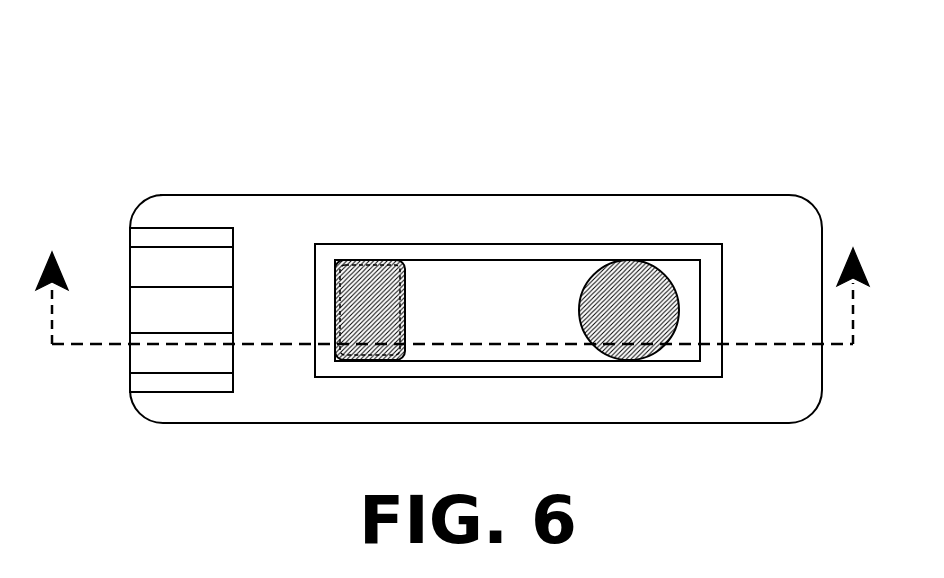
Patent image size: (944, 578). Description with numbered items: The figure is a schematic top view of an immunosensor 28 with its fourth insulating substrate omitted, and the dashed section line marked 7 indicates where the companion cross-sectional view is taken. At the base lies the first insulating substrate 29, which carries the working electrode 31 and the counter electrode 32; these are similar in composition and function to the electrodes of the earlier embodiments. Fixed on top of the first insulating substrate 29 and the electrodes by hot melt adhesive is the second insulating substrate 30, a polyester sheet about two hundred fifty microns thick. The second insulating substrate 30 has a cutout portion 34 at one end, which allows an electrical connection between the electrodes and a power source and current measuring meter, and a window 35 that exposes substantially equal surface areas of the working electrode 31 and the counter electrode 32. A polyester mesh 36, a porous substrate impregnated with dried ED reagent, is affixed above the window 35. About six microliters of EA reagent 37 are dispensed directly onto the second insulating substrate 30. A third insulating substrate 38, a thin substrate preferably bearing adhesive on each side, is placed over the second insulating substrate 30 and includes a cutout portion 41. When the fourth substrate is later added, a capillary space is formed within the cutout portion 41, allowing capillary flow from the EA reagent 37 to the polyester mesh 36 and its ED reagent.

The immunosensor 28 is at (140, 165).
The first insulating substrate 29 is at (155, 310).
The second insulating substrate 30 is at (256, 215).
The working electrode 31 is at (155, 268).
The counter electrode 32 is at (155, 353).
The cutout portion 34 is at (200, 237).
The window 35 is at (355, 268).
The polyester mesh 36 is at (372, 292).
The EA reagent 37 is at (629, 296).
The third insulating substrate 38 is at (457, 248).
The cutout portion 41 is at (532, 308).
The section line 7- 7 is at (452, 279).